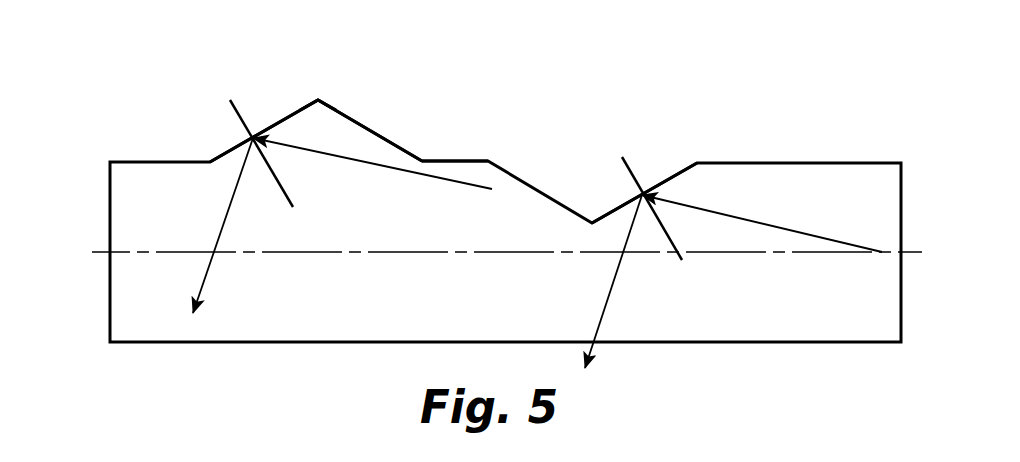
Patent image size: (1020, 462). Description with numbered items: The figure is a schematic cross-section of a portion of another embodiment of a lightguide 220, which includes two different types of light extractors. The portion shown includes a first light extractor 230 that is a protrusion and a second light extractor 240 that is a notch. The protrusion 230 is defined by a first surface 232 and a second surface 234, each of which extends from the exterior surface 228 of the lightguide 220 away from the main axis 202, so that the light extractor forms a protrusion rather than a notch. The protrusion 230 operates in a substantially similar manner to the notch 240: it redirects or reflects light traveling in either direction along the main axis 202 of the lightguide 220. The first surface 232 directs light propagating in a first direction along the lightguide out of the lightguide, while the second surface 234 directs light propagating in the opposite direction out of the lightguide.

The main axis 202 is at (100, 253).
The lightguide 220 is at (177, 120).
The exterior surface 228 is at (452, 160).
The first light extractor 230 is at (310, 90).
The first surface 232 is at (280, 122).
The second surface 234 is at (347, 117).
The second light extractor 240 is at (655, 148).